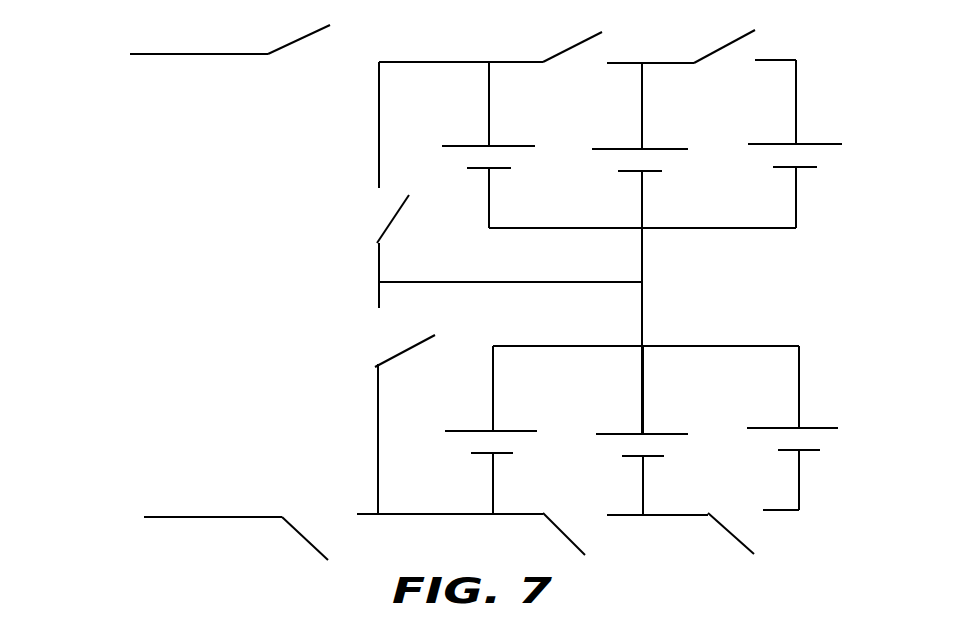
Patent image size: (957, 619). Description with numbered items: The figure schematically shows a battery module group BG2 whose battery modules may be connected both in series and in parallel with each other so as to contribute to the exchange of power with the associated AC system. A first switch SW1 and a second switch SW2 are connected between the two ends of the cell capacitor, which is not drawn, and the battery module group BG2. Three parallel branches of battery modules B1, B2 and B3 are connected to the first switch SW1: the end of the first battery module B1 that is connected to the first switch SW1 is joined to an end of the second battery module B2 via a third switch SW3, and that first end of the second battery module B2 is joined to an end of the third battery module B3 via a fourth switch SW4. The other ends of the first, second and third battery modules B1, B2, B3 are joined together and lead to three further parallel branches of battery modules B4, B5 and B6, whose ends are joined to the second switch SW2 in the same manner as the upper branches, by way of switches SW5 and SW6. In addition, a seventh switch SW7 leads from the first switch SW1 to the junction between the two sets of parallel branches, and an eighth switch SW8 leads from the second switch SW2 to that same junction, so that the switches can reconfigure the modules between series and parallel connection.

The battery module group BG2 is at (188, 208).
The first switch SW1 is at (232, 66).
The second switch SW2 is at (239, 515).
The third switch SW3 is at (568, 71).
The fourth switch SW4 is at (720, 70).
The fifth switch SW5 is at (570, 518).
The sixth switch SW6 is at (727, 518).
The seventh switch SW7 is at (358, 251).
The eighth switch SW8 is at (376, 416).
The first battery module B1 is at (459, 145).
The second battery module B2 is at (619, 145).
The third battery module B3 is at (769, 144).
The fourth battery module B4 is at (469, 430).
The fifth battery module B5 is at (615, 430).
The sixth battery module B6 is at (773, 428).